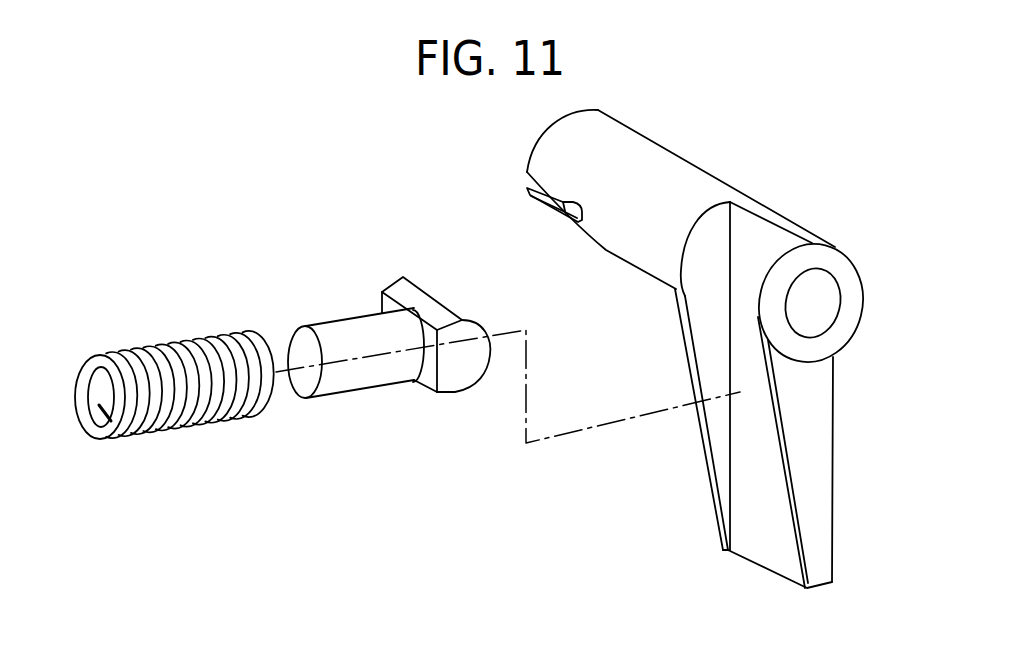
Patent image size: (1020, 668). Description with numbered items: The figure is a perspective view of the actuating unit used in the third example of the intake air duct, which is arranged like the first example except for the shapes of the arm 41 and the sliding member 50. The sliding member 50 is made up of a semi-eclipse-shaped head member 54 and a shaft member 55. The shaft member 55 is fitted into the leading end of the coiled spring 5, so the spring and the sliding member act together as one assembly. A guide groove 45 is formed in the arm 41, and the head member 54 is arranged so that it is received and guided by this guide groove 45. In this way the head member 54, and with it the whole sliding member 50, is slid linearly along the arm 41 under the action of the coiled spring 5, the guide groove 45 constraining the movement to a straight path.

The coiled spring 5 is at (196, 410).
The sliding member 50 is at (336, 290).
The shaft member 55 is at (343, 330).
The head member 54 is at (418, 298).
The arm 41 is at (701, 351).
The guide groove 45 is at (813, 527).